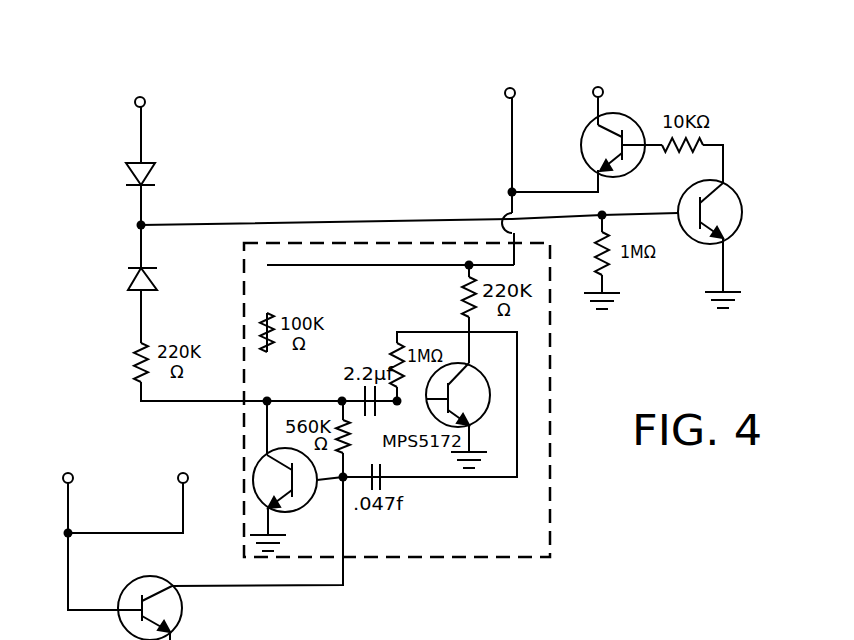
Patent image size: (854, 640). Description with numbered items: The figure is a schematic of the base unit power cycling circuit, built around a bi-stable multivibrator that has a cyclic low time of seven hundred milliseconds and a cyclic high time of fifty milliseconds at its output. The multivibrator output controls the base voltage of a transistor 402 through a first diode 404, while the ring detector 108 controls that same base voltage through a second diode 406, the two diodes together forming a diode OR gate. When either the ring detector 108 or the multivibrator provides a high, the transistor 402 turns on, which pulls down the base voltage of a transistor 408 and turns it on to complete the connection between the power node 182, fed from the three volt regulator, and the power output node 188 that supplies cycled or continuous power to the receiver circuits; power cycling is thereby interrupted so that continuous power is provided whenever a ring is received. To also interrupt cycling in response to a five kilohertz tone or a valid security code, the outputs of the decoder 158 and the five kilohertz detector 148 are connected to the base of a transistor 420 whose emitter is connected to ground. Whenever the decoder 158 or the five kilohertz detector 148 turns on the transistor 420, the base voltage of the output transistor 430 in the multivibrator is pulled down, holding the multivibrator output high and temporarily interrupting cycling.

The ring detector 108 is at (141, 66).
The second diode 406 is at (128, 175).
The first diode 404 is at (128, 281).
The power node 182 is at (508, 96).
The transistor 408 is at (584, 148).
The power output node 188 is at (646, 93).
The transistor 402 is at (741, 213).
The output transistor 430 is at (314, 496).
The transistor 420 is at (182, 611).
The decoder 158 is at (63, 447).
The 5 KHz detector 148 is at (186, 447).